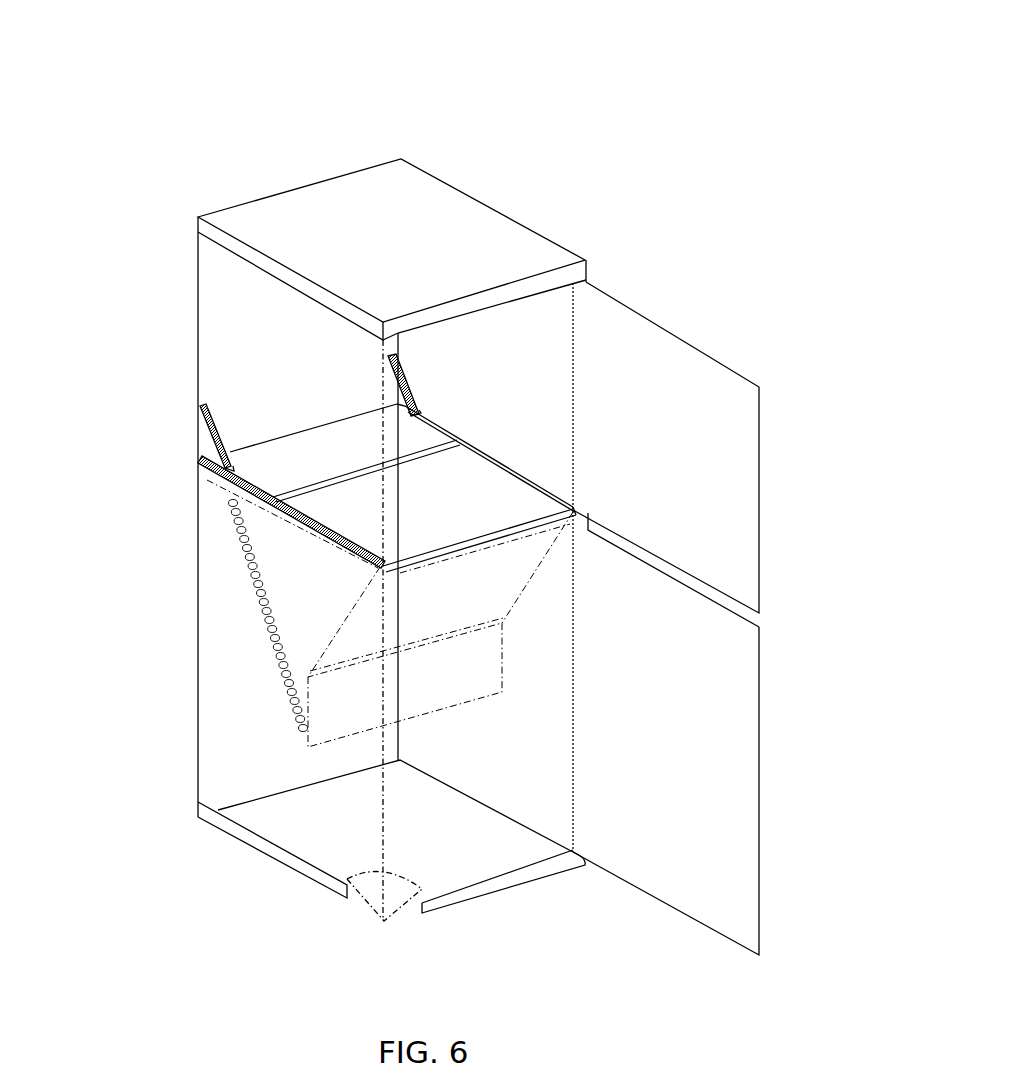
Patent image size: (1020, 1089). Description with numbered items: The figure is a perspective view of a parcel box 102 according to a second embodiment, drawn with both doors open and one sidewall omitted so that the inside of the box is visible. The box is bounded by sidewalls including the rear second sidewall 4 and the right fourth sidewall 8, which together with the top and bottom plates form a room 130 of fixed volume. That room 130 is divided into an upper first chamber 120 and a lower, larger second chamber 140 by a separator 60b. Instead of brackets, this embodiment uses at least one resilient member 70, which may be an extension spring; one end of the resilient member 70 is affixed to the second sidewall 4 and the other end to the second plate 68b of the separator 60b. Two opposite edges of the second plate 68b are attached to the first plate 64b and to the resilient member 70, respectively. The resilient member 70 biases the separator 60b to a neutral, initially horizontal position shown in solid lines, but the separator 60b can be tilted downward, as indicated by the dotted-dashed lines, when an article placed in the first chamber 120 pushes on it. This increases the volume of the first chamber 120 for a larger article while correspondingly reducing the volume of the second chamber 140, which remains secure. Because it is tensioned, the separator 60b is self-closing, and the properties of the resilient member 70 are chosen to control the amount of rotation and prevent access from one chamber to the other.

The parcel box 102 is at (226, 118).
The second sidewall 4 is at (240, 308).
The fourth sidewall 8 is at (542, 328).
The resilient member 70 is at (393, 381).
The separator 60b is at (87, 462).
The second plate 68b is at (260, 475).
The first plate 64b is at (337, 510).
The first chamber 120 is at (540, 408).
The room 130 is at (837, 580).
The second chamber 140 is at (527, 722).